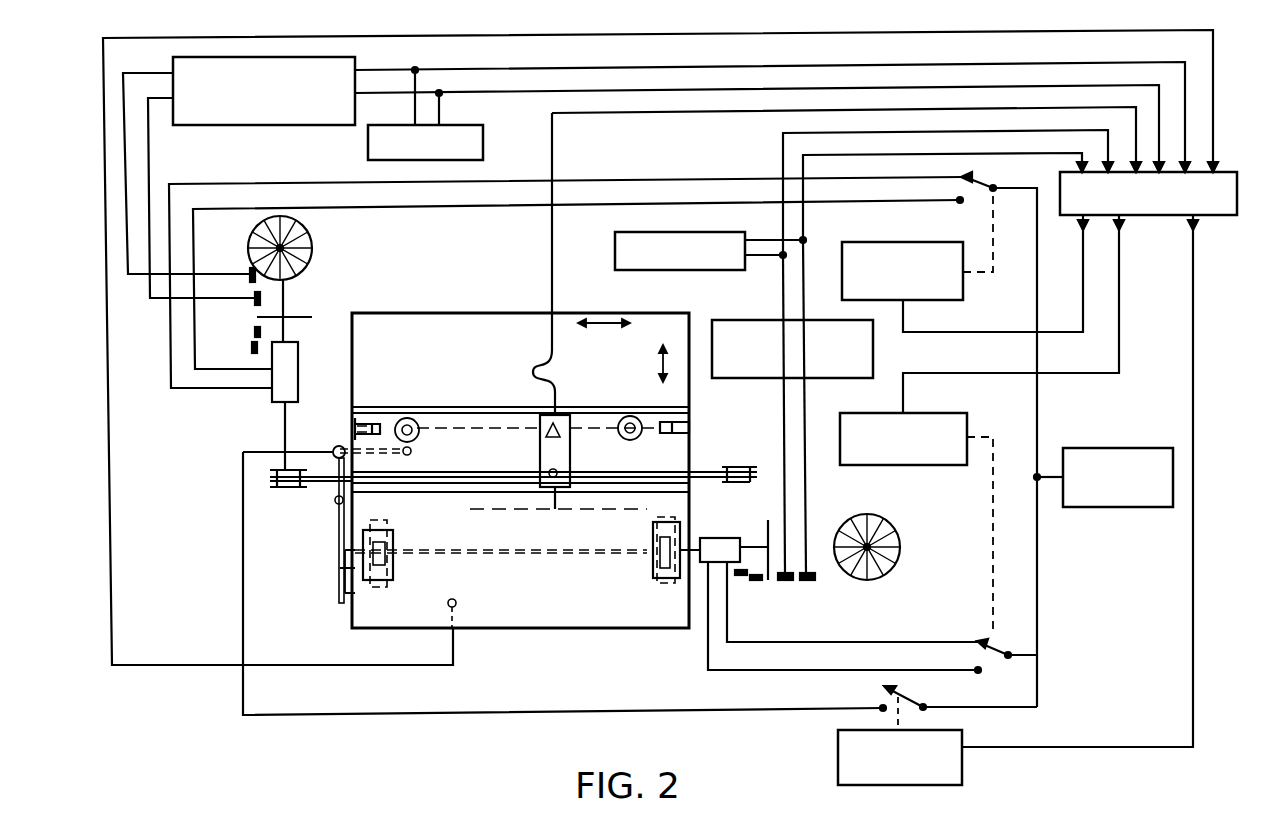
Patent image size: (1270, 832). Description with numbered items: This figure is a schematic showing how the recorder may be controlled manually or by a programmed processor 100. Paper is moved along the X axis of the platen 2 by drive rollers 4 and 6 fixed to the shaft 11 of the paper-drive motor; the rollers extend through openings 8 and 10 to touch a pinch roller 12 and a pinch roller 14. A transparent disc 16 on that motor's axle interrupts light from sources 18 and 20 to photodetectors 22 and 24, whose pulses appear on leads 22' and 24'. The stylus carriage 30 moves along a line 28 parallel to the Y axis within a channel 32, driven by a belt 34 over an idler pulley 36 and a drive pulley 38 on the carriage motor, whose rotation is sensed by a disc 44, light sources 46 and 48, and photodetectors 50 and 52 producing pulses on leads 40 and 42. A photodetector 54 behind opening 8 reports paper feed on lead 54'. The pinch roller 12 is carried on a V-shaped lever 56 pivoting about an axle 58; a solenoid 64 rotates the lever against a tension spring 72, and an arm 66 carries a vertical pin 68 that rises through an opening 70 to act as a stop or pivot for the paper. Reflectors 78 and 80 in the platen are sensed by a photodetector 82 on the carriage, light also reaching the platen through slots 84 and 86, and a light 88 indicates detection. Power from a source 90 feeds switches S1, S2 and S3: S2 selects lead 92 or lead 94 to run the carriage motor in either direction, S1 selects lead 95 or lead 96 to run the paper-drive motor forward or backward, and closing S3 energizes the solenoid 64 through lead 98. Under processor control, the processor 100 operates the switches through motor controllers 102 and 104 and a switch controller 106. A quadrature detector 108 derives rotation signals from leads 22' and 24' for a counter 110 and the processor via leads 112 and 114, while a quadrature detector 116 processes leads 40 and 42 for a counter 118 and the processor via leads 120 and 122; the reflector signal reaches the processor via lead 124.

The platen 2 is at (430, 313).
The drive roller 4 is at (373, 590).
The drive roller 6 is at (662, 585).
The opening 8 is at (393, 535).
The opening 10 is at (653, 535).
The shaft 11 is at (565, 556).
The pinch roller 12 is at (387, 565).
The pinch roller 14 is at (657, 565).
The transparent disc 16 is at (768, 527).
The light source 18 is at (741, 580).
The light source 20 is at (756, 582).
The photodetector 22 is at (825, 595).
The lead 22' is at (833, 406).
The photodetector 24 is at (799, 597).
The lead 24' is at (760, 414).
The line 28 is at (540, 510).
The carriage 30 is at (557, 413).
The channel 32 is at (473, 407).
The belt 34 is at (716, 468).
The idler pulley 36 is at (738, 482).
The drive pulley 38 is at (285, 487).
The lead 40 is at (160, 298).
The lead 42 is at (138, 274).
The disc 44 is at (297, 280).
The light source 46 is at (250, 330).
The light source 48 is at (250, 348).
The photodetector 50 is at (250, 295).
The photodetector 52 is at (248, 268).
The photodetector 54 is at (474, 605).
The lead 54' is at (660, 362).
The V-shaped lever 56 is at (338, 535).
The axle 58 is at (343, 603).
The solenoid 64 is at (338, 446).
The arm 66 is at (365, 424).
The vertical pin 68 is at (412, 455).
The opening 70 is at (412, 450).
The tension spring 72 is at (335, 500).
The reflector 78 is at (407, 418).
The reflector 80 is at (638, 435).
The photodetector 82 is at (546, 437).
The slot 84 is at (353, 427).
The slot 86 is at (692, 422).
The light 88 is at (558, 470).
The source 90 is at (1093, 448).
The lead 92 is at (650, 182).
The lead 94 is at (363, 209).
The lead 95 is at (875, 642).
The lead 96 is at (780, 672).
The lead 98 is at (600, 713).
The processor 100 is at (1162, 215).
The motor controller 102 is at (955, 300).
The motor controller 104 is at (940, 413).
The switch controller 106 is at (962, 770).
The quadrature detector 108 is at (873, 342).
The counter 110 is at (672, 270).
The lead 112 is at (780, 158).
The lead 114 is at (803, 239).
The quadrature detector 116 is at (258, 125).
The counter 118 is at (483, 132).
The lead 120 is at (667, 70).
The lead 122 is at (485, 95).
The lead 124 is at (552, 265).
The switch S1 is at (1000, 655).
The switch S2 is at (999, 434).
The switch S3 is at (910, 700).
The X axis X is at (656, 363).
The Y axis Y is at (604, 333).